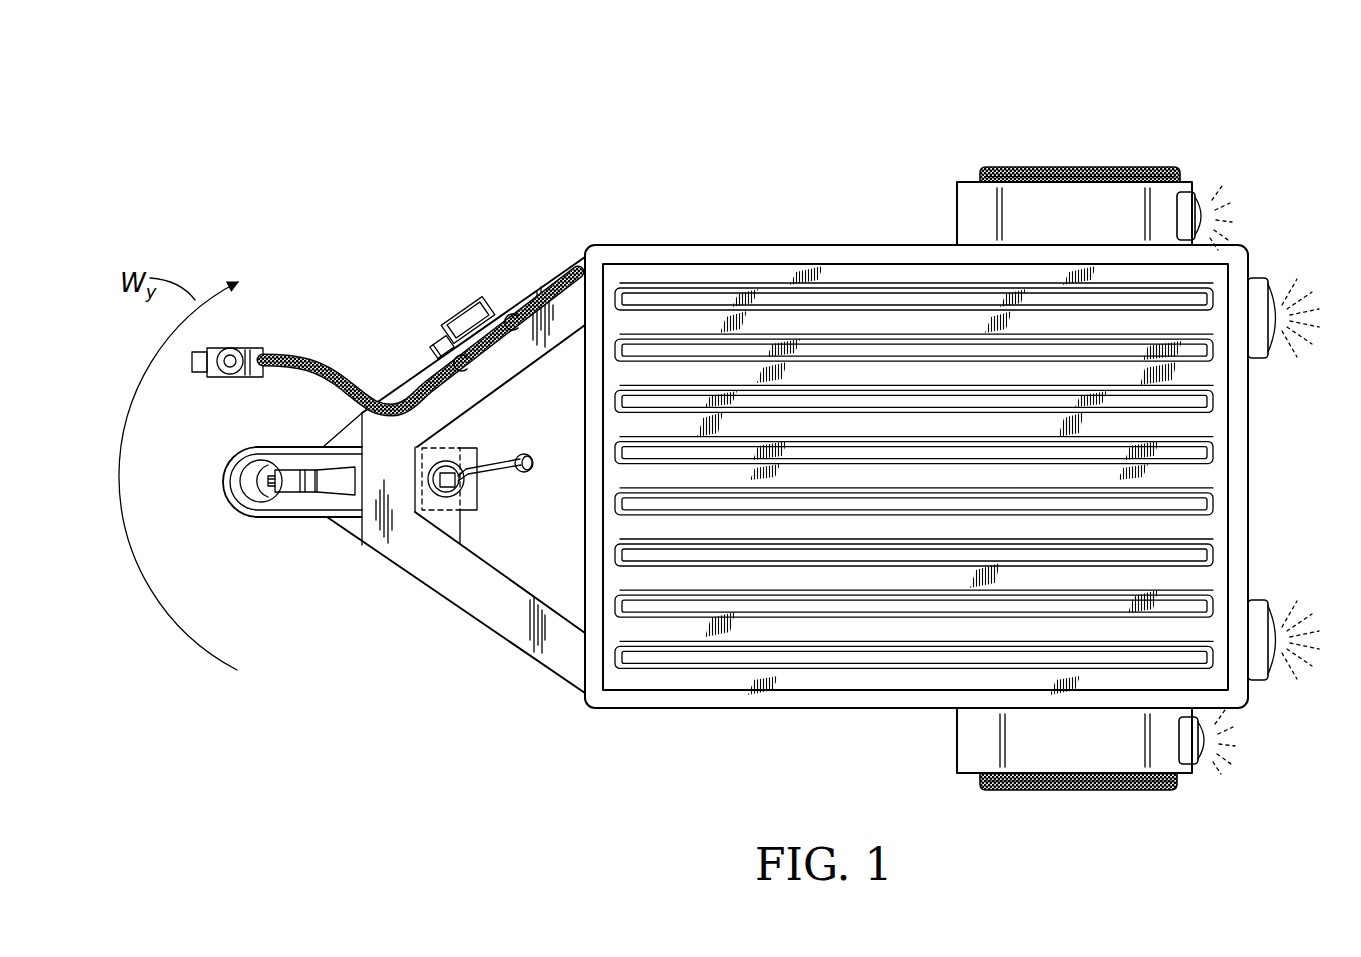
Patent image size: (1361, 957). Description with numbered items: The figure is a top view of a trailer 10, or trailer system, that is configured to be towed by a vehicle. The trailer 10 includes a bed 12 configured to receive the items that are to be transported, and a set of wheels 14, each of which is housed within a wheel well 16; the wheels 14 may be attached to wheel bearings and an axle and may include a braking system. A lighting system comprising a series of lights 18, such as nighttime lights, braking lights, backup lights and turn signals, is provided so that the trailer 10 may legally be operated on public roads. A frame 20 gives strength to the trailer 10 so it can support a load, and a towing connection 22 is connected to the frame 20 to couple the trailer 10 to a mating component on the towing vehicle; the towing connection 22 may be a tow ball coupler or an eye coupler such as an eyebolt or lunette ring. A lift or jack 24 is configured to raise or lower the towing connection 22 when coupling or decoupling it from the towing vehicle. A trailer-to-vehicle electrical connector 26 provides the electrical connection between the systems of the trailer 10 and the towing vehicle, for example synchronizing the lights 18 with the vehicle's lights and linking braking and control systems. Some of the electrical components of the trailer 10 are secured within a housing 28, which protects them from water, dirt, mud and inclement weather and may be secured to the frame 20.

The trailer 10 is at (572, 118).
The bed 12 is at (714, 244).
The wheels 14 is at (1075, 167).
The wheel well 16 is at (957, 213).
The lights 18 is at (1190, 215).
The frame 20 is at (468, 618).
The towing connection 22 is at (262, 518).
The jack 24 is at (467, 448).
The trailer-to-vehicle electrical connector 26 is at (252, 348).
The housing 28 is at (468, 322).